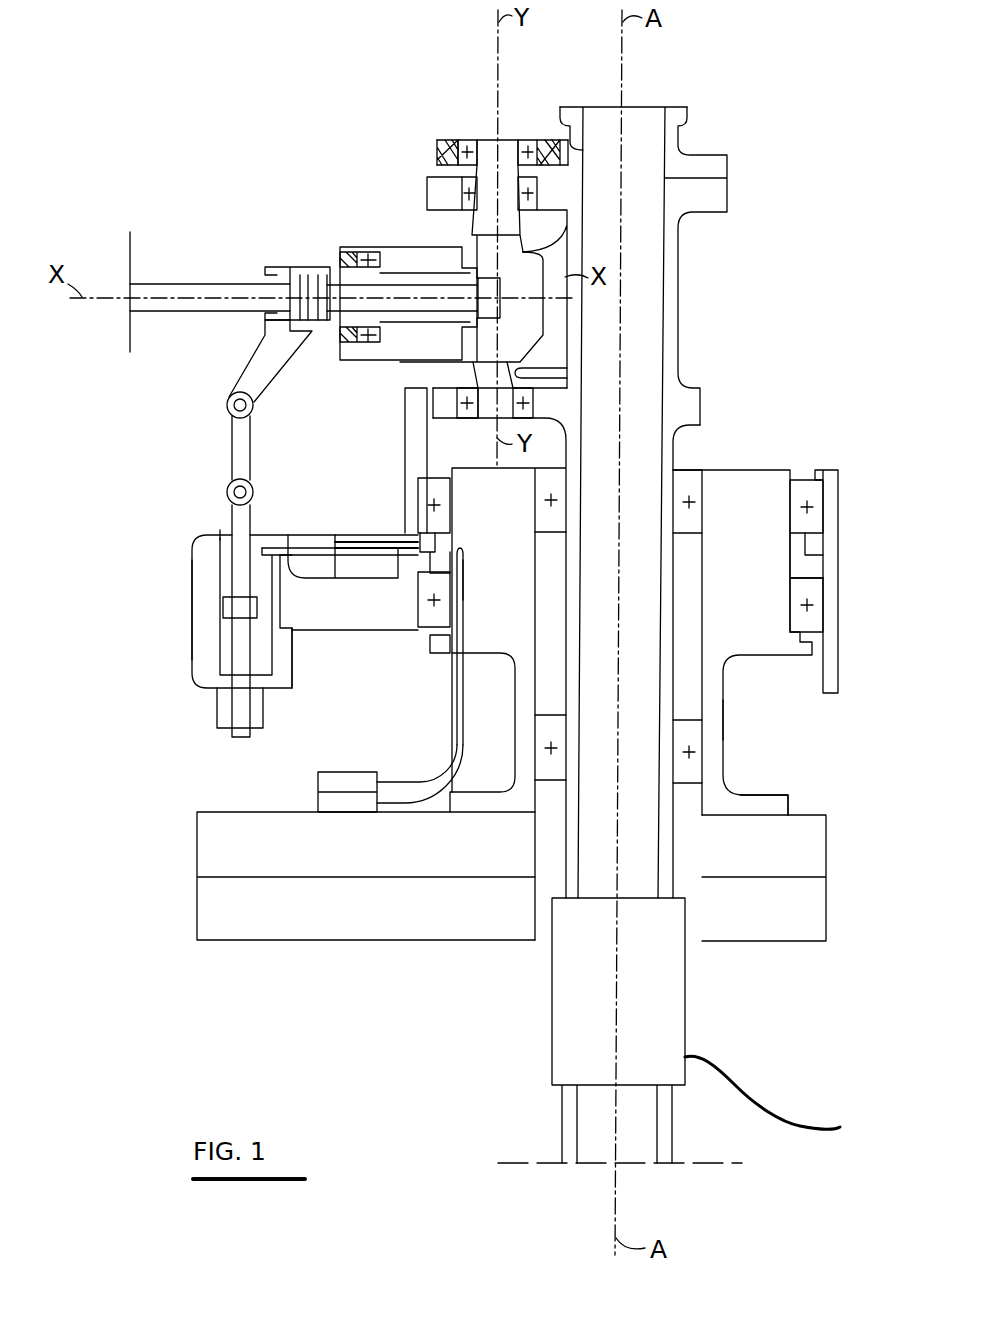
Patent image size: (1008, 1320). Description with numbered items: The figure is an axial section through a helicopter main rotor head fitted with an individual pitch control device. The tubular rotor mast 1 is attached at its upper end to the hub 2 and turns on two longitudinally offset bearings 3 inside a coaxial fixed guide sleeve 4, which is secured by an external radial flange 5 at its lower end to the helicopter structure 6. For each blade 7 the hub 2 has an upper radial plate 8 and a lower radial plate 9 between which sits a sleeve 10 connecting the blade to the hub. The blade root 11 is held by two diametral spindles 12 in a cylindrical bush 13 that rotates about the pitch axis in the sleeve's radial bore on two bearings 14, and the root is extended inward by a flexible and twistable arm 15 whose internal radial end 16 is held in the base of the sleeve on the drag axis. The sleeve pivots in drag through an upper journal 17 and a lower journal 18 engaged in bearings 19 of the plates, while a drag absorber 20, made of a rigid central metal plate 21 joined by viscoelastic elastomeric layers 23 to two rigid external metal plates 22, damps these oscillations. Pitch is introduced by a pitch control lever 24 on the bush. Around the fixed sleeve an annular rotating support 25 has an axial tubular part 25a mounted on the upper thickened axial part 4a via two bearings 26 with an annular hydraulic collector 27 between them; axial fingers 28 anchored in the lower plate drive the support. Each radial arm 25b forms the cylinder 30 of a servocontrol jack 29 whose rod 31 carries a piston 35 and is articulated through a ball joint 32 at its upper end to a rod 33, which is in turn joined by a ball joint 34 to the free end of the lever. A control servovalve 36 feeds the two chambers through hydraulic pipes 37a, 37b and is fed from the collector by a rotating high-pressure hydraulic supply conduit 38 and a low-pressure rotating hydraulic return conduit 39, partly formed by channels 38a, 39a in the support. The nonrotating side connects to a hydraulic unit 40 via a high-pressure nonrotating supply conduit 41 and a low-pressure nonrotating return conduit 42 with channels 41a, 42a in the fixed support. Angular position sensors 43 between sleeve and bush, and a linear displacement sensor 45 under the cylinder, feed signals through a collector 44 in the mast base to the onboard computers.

The rotor mast 1 is at (578, 605).
The hub 2 is at (668, 336).
The bearings 3 is at (673, 510).
The guide sleeve 4 is at (765, 449).
The upper thickened axial part 4a is at (757, 655).
The external radial flange 5 is at (762, 800).
The structure 6 is at (822, 842).
The blade 7 is at (175, 284).
The upper radial plate 8 is at (433, 192).
The lower radial plate 9 is at (447, 418).
The sleeve 10 is at (530, 252).
The blade root 11 is at (323, 280).
The diametral spindles 12 is at (290, 283).
The cylindrical bush 13 is at (385, 345).
The bearings 14 is at (366, 257).
The flexible and twistable arm 15 is at (350, 296).
The internal radial end 16 is at (508, 318).
The upper journal 17 is at (503, 142).
The lower journal 18 is at (530, 376).
The bearings 19 is at (530, 192).
The drag absorber 20 is at (420, 117).
The rigid central metal plate 21 is at (437, 152).
The rigid external metal plates 22 is at (560, 152).
The viscoelastic elastomeric layers 23 is at (455, 140).
The pitch control lever 24 is at (263, 368).
The rotating support 25 is at (196, 693).
The axial tubular part 25a is at (838, 524).
The radial arm 25b is at (333, 630).
The bearings 26 is at (823, 497).
The annular hydraulic collector 27 is at (823, 562).
The axial fingers 28 is at (405, 445).
The servocontrol jack 29 is at (213, 516).
The cylinder 30 is at (205, 560).
The rod 31 is at (232, 546).
The pivot 32 is at (230, 492).
The rod 33 is at (232, 452).
The ball joint 34 is at (228, 403).
The piston 35 is at (223, 607).
The control servovalve 36 is at (312, 555).
The hydraulic pipe 37a is at (274, 532).
The hydraulic pipe 37b is at (292, 640).
The rotating high-pressure hydraulic supply conduit 38 is at (345, 544).
The channel 38a is at (432, 555).
The low-pressure rotating hydraulic return conduit 39 is at (420, 525).
The channel 39a is at (418, 600).
The hydraulic unit 40 is at (325, 800).
The high-pressure nonrotating supply conduit 41 is at (470, 768).
The channel 41a is at (470, 600).
The low-pressure nonrotating return conduit 42 is at (455, 742).
The channel 42a is at (435, 655).
The angular position sensors 43 is at (357, 247).
The collector 44 is at (685, 985).
The sensor of linear displacement 45 is at (220, 725).